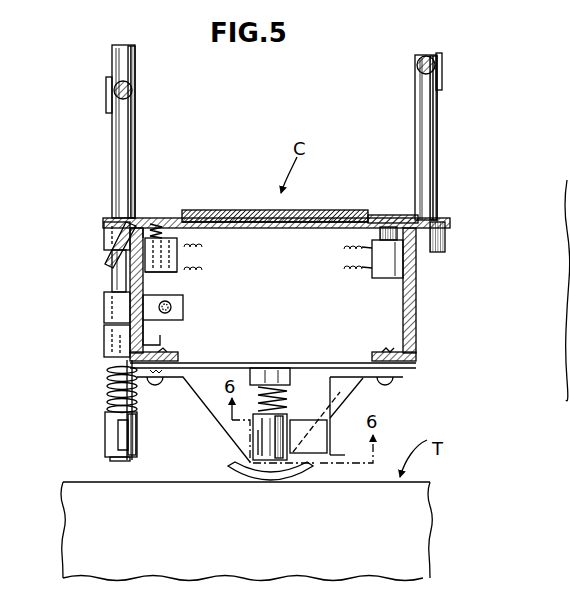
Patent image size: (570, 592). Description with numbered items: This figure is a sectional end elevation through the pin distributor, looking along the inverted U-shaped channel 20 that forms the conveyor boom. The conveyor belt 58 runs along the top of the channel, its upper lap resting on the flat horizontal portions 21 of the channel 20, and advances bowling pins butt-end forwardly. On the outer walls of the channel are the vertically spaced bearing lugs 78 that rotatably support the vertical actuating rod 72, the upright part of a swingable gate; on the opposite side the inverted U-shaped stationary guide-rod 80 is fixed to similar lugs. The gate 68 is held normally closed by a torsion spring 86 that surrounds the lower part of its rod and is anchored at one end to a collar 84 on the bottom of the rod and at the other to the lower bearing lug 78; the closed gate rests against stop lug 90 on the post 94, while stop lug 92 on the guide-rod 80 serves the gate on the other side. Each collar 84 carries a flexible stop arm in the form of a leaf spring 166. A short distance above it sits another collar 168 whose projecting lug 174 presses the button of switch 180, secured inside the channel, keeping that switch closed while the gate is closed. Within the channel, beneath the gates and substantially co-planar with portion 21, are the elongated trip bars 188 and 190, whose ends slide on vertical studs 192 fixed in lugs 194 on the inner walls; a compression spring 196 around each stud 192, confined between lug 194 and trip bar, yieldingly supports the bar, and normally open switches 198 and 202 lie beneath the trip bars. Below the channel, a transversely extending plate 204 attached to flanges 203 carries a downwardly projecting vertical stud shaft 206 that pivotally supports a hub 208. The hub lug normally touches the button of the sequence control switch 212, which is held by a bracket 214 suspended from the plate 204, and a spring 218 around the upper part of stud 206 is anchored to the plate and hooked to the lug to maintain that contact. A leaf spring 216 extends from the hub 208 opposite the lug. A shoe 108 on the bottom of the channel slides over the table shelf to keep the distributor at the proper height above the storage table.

The inverted U-shaped channel 20 is at (132, 280).
The flat horizontal portion 21 is at (292, 225).
The conveyor belt 58 is at (322, 210).
The swingable gate 68 is at (131, 88).
The vertical actuating rod 72 is at (127, 285).
The bearing lug 78 is at (107, 242).
The stationary guide-rod 80 is at (438, 147).
The collar 84 is at (105, 425).
The torsion spring 86 is at (108, 390).
The stop lug 90 is at (106, 100).
The stop lug 92 is at (442, 80).
The post 94 is at (135, 131).
The shoe 108 is at (408, 377).
The leaf spring 166 is at (117, 445).
The collar 168 is at (117, 313).
The projecting lug 174 is at (183, 298).
The switch 180 is at (175, 320).
The trip bar 188 is at (140, 217).
The trip bar 190 is at (397, 227).
The vertical stud 192 is at (155, 217).
The lug 194 is at (167, 253).
The compression spring 196 is at (107, 233).
The normally open switch 198 is at (175, 272).
The normally open switch 202 is at (383, 273).
The flange 203 is at (170, 348).
The transversely extending plate 204 is at (303, 363).
The vertical stud shaft 206 is at (248, 366).
The hub 208 is at (262, 447).
The sequence control switch 212 is at (308, 424).
The bracket 214 is at (323, 420).
The leaf spring 216 is at (265, 462).
The spring 218 is at (291, 394).